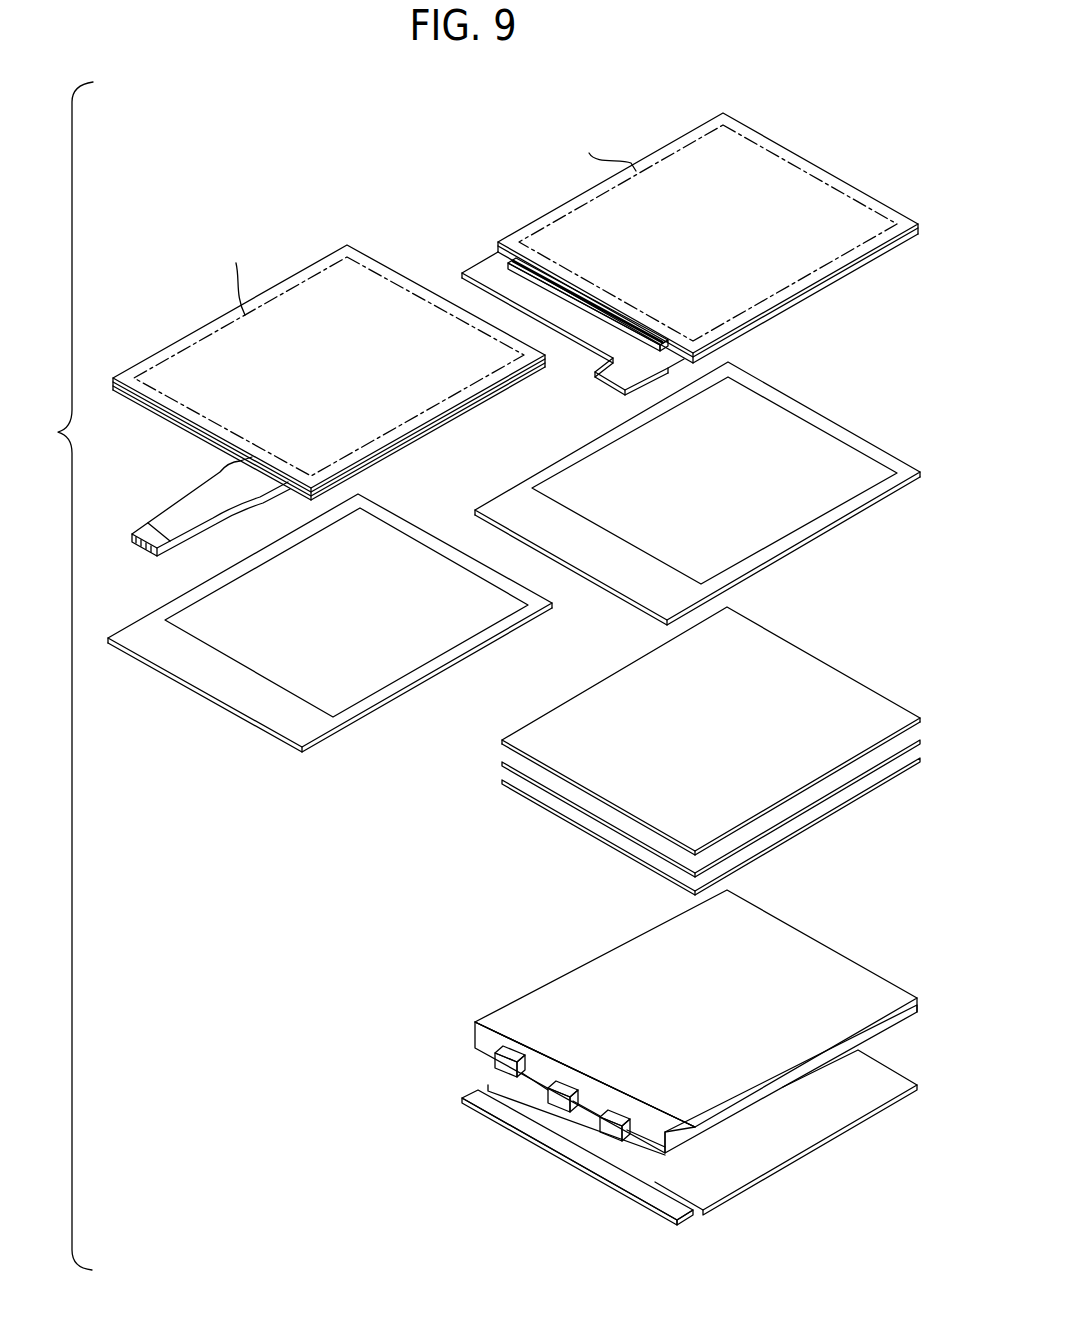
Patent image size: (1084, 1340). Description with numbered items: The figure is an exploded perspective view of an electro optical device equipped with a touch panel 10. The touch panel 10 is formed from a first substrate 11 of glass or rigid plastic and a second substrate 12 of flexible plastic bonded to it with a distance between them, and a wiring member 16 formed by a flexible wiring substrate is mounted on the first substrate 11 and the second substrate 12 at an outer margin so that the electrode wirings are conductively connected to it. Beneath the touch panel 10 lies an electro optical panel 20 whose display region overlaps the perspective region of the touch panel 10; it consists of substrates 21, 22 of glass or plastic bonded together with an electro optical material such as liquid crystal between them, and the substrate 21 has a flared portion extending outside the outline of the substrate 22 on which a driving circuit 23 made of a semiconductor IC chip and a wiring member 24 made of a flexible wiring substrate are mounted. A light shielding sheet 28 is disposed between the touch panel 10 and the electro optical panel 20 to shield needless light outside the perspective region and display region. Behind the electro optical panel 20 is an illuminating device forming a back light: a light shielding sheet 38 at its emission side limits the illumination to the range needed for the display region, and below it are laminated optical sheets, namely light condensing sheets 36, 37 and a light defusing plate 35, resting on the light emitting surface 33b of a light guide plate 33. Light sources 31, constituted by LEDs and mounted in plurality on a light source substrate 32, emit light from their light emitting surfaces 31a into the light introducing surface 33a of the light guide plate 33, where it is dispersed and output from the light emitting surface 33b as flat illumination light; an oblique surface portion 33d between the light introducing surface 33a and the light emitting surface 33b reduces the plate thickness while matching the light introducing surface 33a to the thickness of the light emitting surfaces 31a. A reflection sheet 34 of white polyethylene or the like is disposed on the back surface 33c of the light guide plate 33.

The touch panel 10 is at (355, 228).
The first substrate 11 is at (462, 412).
The second substrate 12 is at (398, 272).
The wiring member 16 is at (193, 533).
The electro optical panel 20 is at (716, 154).
The substrate 21 is at (838, 283).
The substrate 22 is at (801, 154).
The driving circuit 23 is at (585, 300).
The wiring member 24 is at (483, 272).
The light shielding sheet 28 is at (493, 645).
The light source 31 is at (495, 1063).
The light emitting surface 31a is at (580, 1097).
The light source substrate 32 is at (525, 1143).
The light guide plate 33 is at (764, 952).
The light introducing surface 33a is at (485, 1042).
The light emitting surface 33b is at (615, 987).
The back surface 33c is at (810, 1077).
The oblique surface portion 33d is at (522, 1042).
The reflection sheet 34 is at (822, 1148).
The light defusing plate 35 is at (833, 815).
The light condensing sheet 36 is at (512, 780).
The light condensing sheet 37 is at (627, 660).
The light shielding sheet 38 is at (817, 537).